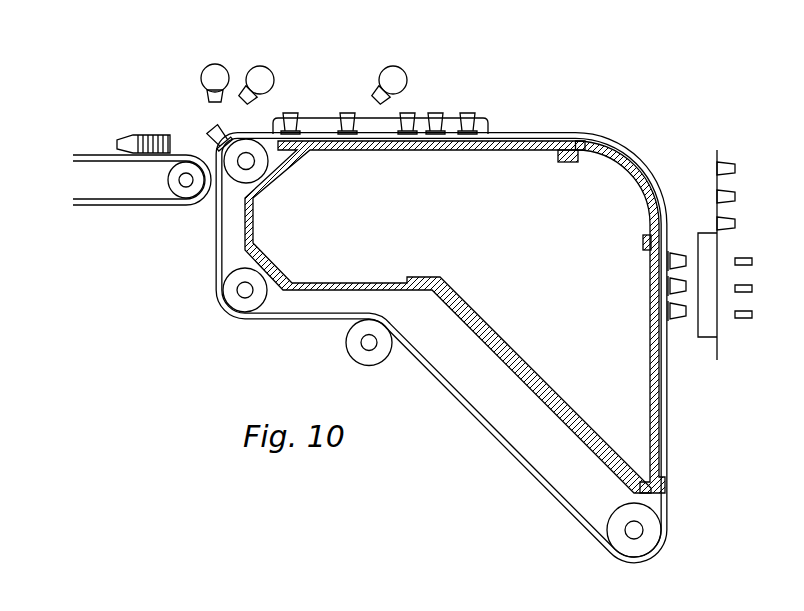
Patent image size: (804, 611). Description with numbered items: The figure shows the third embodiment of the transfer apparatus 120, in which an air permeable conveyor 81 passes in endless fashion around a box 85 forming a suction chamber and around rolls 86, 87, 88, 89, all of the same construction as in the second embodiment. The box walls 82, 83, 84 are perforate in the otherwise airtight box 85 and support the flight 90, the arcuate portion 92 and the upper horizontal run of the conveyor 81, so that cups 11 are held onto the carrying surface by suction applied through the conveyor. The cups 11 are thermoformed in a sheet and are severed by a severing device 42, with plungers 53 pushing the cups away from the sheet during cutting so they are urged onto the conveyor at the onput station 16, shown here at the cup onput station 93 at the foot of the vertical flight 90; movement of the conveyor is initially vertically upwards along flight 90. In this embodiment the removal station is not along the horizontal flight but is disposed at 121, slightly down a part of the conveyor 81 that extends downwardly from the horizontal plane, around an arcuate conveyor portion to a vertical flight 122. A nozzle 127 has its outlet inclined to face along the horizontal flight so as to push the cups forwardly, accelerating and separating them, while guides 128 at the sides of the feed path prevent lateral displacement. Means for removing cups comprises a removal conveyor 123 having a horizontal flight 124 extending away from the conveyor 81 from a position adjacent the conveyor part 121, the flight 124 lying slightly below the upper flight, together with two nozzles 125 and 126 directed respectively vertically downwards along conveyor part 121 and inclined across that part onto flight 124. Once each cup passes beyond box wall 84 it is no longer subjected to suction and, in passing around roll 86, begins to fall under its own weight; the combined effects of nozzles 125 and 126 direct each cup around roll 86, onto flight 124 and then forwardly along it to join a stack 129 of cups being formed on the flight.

The cups 11 is at (446, 121).
The onput station 16 is at (677, 336).
The severing device 42 is at (722, 253).
The plungers 53 is at (752, 262).
The conveyor 81 is at (463, 403).
The box wall 82 is at (654, 326).
The box wall 83 is at (634, 180).
The box wall 84 is at (433, 152).
The box 85 is at (455, 317).
The roll 86 is at (258, 174).
The roll 87 is at (229, 298).
The roll 88 is at (360, 357).
The roll 89 is at (652, 543).
The flight 90 is at (508, 133).
The arcuate portion 92 is at (658, 193).
The cup onput station 93 is at (669, 441).
The transfer apparatus 120 is at (651, 172).
The removal station 121 is at (210, 150).
The vertical flight 122 is at (217, 266).
The removal conveyor 123 is at (134, 205).
The horizontal flight 124 is at (147, 163).
The nozzle 125 is at (219, 66).
The nozzle 126 is at (282, 57).
The nozzle 127 is at (384, 67).
The guides 128 is at (386, 123).
The stack 129 is at (150, 132).